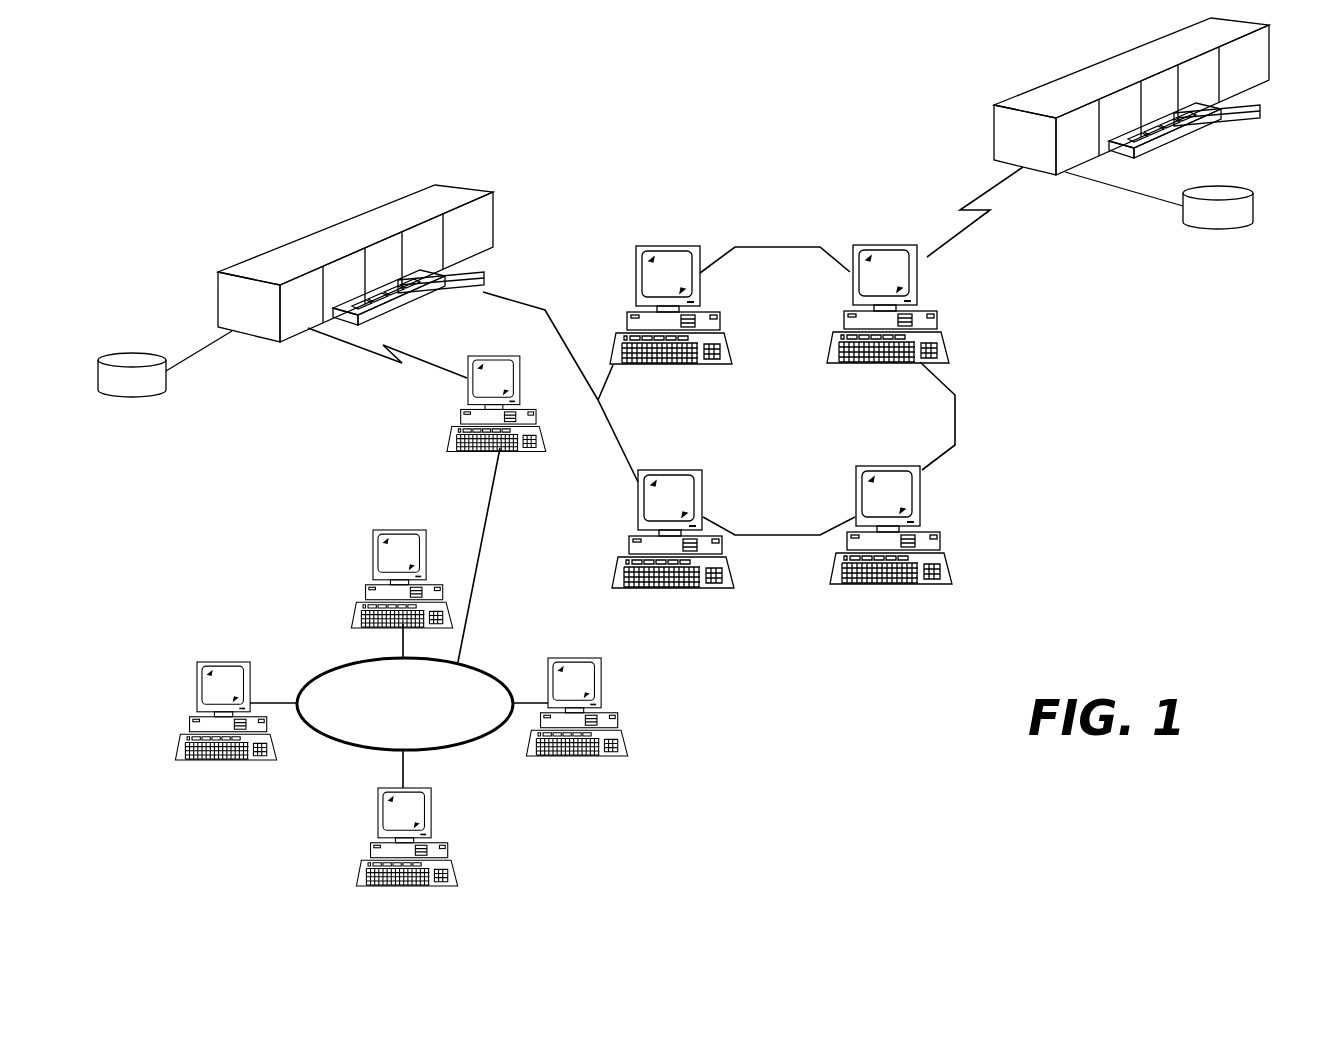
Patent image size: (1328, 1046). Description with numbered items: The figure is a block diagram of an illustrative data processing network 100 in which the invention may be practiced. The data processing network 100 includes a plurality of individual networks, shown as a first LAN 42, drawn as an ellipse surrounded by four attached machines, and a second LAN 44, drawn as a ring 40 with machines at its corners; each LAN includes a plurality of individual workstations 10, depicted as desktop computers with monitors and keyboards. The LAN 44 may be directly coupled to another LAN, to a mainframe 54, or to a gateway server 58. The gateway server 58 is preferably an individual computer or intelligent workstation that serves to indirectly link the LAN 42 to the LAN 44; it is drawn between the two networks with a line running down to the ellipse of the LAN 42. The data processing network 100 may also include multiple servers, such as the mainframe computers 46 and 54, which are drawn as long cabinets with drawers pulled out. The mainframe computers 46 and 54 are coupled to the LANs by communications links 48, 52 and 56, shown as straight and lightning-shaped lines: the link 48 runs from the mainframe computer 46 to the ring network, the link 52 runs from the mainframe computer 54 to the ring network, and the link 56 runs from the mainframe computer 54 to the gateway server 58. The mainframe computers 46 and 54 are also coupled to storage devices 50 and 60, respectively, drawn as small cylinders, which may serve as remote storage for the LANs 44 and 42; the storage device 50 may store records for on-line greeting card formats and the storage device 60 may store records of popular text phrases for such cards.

The data processing network 100 is at (244, 90).
The workstation 10 is at (679, 246).
The local area network (ring) 40 is at (780, 230).
The LAN 42 is at (316, 666).
The LAN 44 is at (787, 415).
The mainframe computer 46 is at (1116, 57).
The communications link 48 is at (988, 190).
The storage device 50 is at (1256, 202).
The communications link 52 is at (516, 306).
The mainframe computer 54 is at (380, 208).
The communications link 56 is at (334, 342).
The gateway server 58 is at (492, 356).
The storage device 60 is at (132, 357).